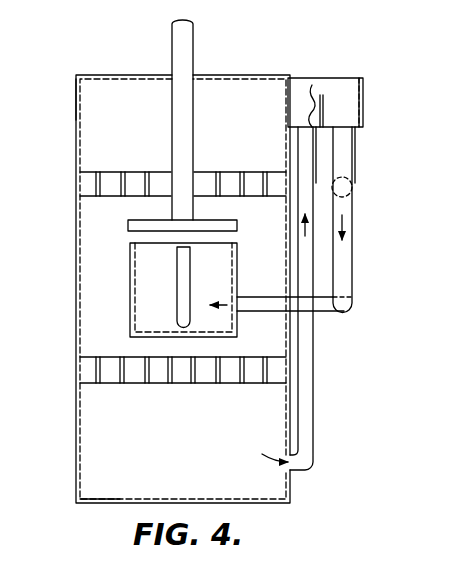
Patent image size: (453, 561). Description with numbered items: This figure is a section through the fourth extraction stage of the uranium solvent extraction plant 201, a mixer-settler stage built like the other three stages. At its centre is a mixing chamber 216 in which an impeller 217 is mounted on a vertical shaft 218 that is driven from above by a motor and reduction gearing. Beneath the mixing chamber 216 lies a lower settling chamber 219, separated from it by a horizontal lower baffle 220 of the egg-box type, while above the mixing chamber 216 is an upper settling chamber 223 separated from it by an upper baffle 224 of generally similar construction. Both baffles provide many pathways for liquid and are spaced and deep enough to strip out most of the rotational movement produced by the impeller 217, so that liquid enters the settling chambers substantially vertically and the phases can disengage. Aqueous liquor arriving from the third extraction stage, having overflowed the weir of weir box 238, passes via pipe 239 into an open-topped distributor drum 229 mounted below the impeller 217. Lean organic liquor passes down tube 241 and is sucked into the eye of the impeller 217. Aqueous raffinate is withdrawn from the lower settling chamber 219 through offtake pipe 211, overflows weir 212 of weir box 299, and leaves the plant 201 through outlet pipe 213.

The uranium solvent extraction plant 201 is at (75, 328).
The offtake pipe 211 is at (305, 362).
The weir 212 is at (337, 106).
The outlet pipe 213 is at (355, 150).
The mixing chamber 216 is at (80, 268).
The impeller 217 is at (140, 228).
The vertical shaft 218 is at (183, 42).
The lower settling chamber 219 is at (103, 470).
The lower baffle 220 is at (110, 375).
The upper settling chamber 223 is at (93, 103).
The upper baffle 224 is at (93, 172).
The distributor drum 229 is at (130, 330).
The weir box 238 is at (363, 108).
The pipe 239 is at (345, 262).
The tube 241 is at (177, 288).
The weir box 299 is at (300, 78).